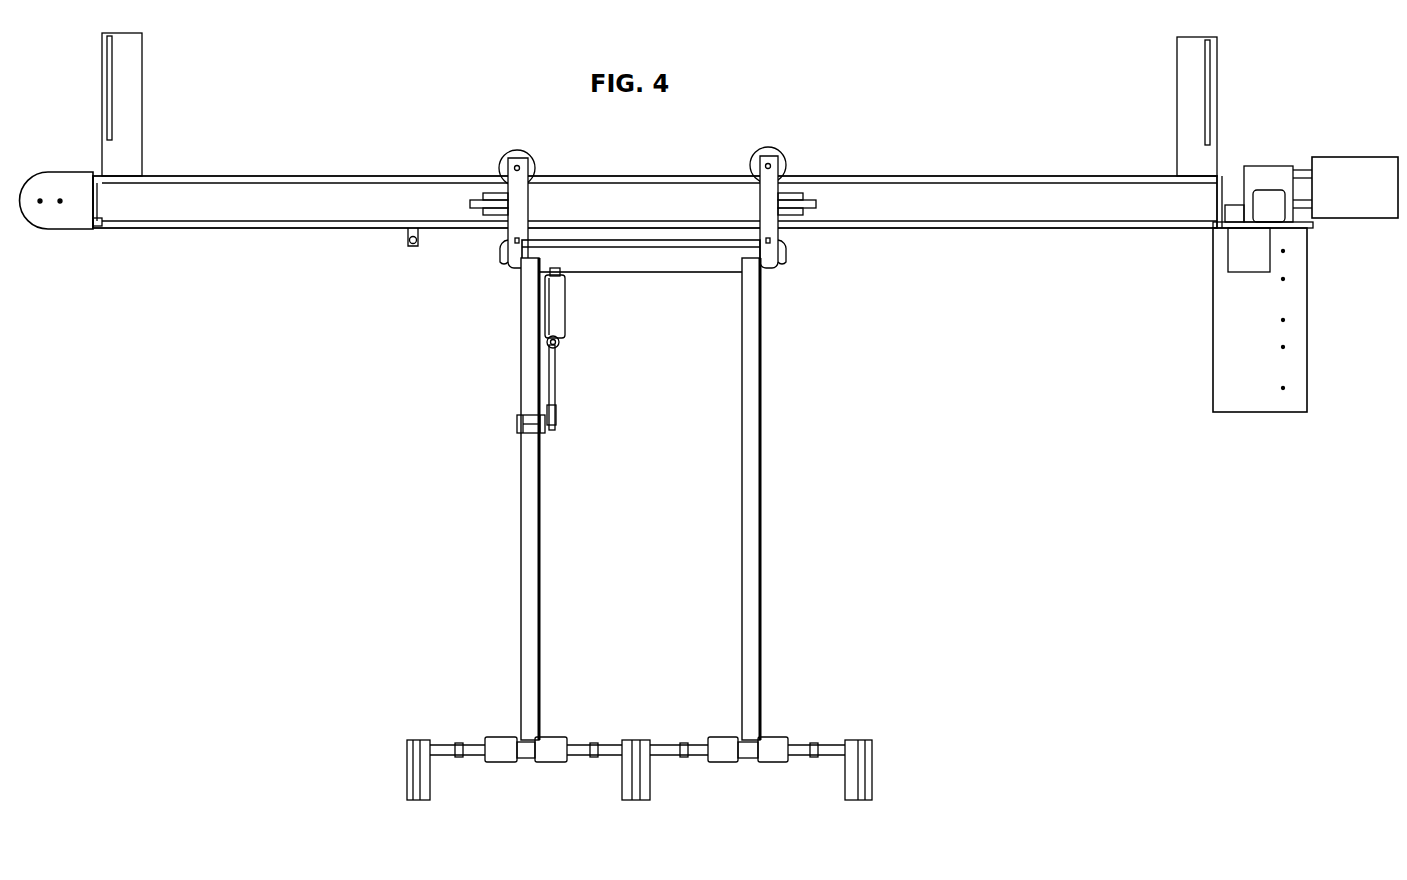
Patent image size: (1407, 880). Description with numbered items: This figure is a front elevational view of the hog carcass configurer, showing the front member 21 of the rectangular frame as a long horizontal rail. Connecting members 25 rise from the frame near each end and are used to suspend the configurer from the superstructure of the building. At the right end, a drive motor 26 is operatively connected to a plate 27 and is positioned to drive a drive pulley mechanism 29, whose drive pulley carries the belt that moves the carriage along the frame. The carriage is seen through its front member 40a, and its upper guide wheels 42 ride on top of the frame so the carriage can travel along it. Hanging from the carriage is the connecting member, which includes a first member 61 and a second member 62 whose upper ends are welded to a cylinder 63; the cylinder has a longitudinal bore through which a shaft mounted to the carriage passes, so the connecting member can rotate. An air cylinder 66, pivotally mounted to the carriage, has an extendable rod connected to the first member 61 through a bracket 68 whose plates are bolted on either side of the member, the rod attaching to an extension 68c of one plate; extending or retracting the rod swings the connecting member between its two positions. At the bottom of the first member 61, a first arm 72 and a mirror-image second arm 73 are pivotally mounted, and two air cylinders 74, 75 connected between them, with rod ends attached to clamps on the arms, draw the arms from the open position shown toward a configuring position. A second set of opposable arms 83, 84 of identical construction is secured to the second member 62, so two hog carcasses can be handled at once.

The front member 21 is at (270, 210).
The connecting members 25 is at (142, 118).
The drive motor 26 is at (1347, 157).
The plate 27 is at (1214, 360).
The drive pulley mechanism 29 is at (1265, 165).
The front member 40a is at (642, 230).
The guide wheel 42 is at (519, 150).
The first member 61 is at (522, 583).
The second member 62 is at (760, 608).
The cylinder 63 is at (687, 268).
The air cylinder 66 is at (566, 320).
The bracket 68 is at (540, 445).
The extension 68c is at (555, 428).
The first arm 72 is at (432, 742).
The second arm 73 is at (610, 742).
The air cylinder 74 is at (497, 762).
The air cylinder 75 is at (555, 762).
The opposable arm 83 is at (660, 742).
The opposable arm 84 is at (832, 742).